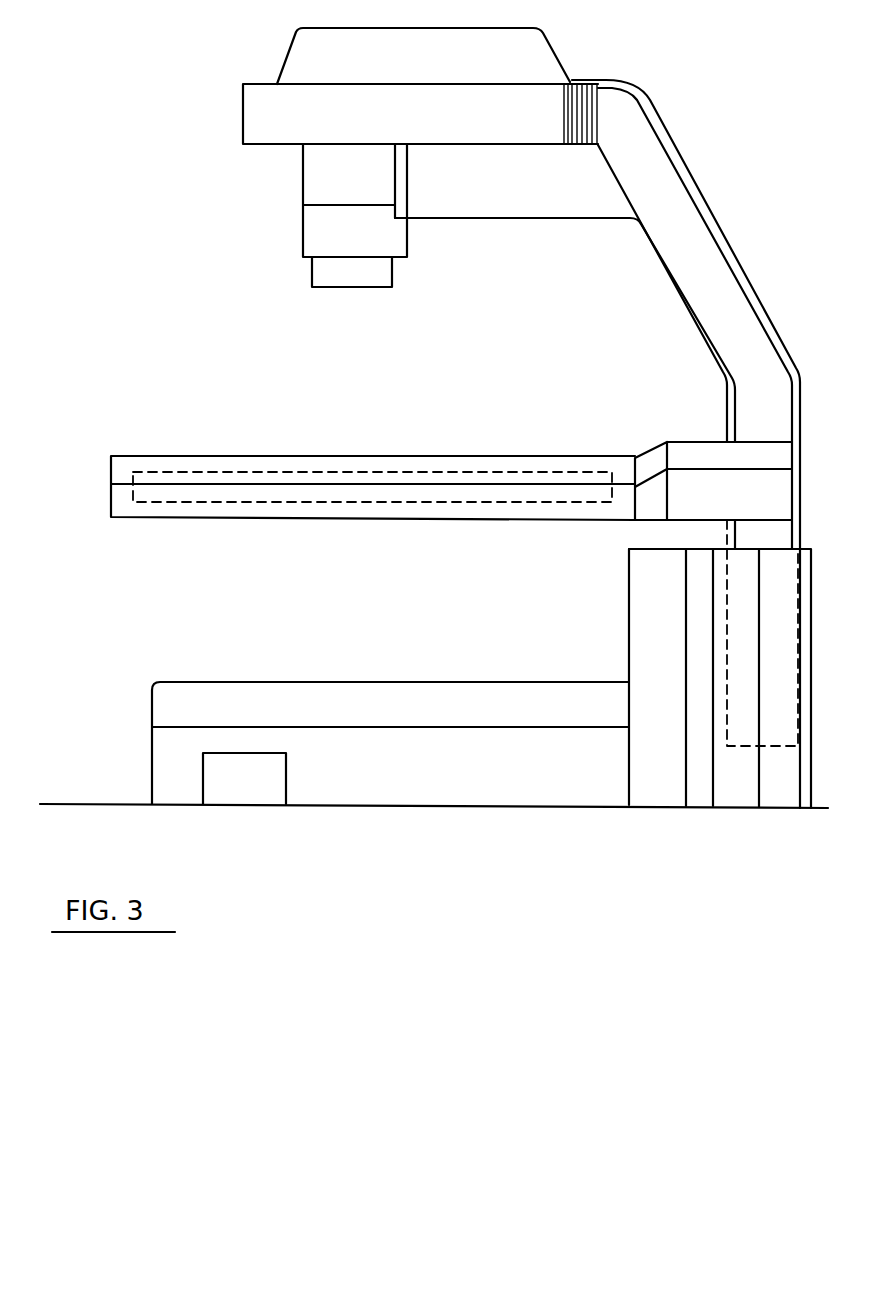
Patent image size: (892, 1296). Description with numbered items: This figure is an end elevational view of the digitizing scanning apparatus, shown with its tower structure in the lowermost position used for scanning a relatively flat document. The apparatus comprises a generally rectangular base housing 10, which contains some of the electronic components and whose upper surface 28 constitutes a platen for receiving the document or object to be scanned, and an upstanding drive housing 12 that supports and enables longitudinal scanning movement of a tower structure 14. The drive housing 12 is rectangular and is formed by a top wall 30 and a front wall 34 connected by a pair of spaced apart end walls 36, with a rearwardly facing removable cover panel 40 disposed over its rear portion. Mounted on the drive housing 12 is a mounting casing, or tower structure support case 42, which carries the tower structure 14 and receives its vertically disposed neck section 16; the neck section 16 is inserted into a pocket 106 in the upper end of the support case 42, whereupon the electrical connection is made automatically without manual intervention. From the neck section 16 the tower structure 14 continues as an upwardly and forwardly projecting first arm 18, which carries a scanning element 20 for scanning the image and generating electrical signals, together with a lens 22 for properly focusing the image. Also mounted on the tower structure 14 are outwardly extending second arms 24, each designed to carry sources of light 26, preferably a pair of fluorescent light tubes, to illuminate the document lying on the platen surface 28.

The base housing 10 is at (140, 728).
The drive housing 12 is at (618, 580).
The tower structure 14 is at (664, 116).
The neck section 16 is at (657, 227).
The first arm 18 is at (280, 117).
The scanning element 20 is at (313, 62).
The lens 22 is at (330, 235).
The second arms 24 is at (692, 440).
The sources of light 26 is at (303, 475).
The upper surface 28 is at (353, 697).
The top wall 30 is at (667, 547).
The front wall 34 is at (628, 608).
The end walls 36 is at (647, 743).
The removable cover panel 40 is at (703, 793).
The tower structure support case 42 is at (785, 788).
The pocket 106 is at (748, 547).